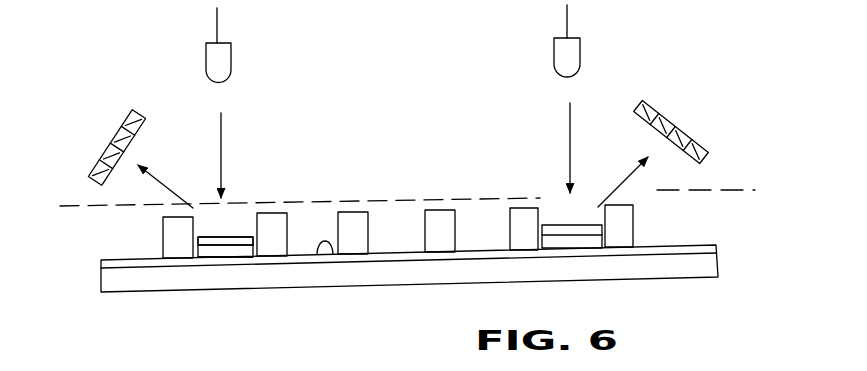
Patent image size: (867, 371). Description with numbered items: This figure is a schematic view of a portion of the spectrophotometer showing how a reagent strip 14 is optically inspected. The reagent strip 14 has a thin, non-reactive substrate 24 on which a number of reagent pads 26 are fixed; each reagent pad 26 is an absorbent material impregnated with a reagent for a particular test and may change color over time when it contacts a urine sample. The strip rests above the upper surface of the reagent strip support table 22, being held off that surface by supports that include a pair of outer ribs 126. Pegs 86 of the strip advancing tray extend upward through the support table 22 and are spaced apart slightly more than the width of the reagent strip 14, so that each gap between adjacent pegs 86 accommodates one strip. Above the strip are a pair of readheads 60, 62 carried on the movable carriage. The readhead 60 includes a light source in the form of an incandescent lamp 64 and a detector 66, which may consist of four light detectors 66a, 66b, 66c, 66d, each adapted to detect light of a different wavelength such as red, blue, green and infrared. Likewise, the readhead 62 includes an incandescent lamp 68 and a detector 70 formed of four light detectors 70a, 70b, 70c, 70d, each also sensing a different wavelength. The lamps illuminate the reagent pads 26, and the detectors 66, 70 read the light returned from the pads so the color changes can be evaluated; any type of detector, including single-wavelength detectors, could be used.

The reagent strip 14 is at (218, 263).
The reagent strip support table 22 is at (140, 293).
The substrate 24 is at (240, 250).
The reagent pad 26 is at (229, 238).
The readhead 60 is at (133, 133).
The readhead 62 is at (693, 122).
The incandescent lamp 64 is at (222, 62).
The detector 66 is at (133, 152).
The light detector 66a is at (145, 125).
The light detector 66b is at (134, 148).
The light detector 66c is at (123, 163).
The light detector 66d is at (104, 185).
The incandescent lamp 68 is at (558, 49).
The detector 70 is at (693, 129).
The light detector 70a is at (638, 113).
The light detector 70b is at (657, 137).
The light detector 70c is at (672, 148).
The light detector 70d is at (700, 165).
The pegs 86 is at (352, 238).
The outer ribs 126 is at (332, 247).